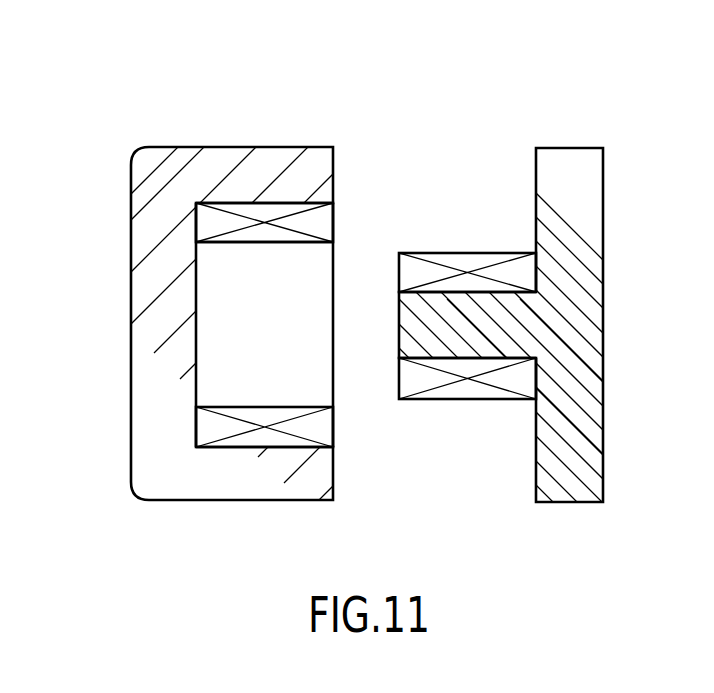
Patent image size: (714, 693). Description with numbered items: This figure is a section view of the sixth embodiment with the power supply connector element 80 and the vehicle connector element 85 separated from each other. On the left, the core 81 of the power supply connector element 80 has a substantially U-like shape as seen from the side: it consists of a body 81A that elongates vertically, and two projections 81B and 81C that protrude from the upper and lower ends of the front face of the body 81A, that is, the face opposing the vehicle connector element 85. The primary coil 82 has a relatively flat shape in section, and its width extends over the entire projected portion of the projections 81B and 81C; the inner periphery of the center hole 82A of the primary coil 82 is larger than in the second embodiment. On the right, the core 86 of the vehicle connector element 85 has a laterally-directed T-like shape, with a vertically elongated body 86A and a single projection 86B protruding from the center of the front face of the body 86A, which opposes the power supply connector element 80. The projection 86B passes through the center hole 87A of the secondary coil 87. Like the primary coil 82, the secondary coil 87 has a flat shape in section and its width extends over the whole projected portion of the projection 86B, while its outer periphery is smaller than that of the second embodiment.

The power supply connector element 80 is at (222, 130).
The core 81 is at (170, 146).
The body 81A is at (138, 365).
The projection 81B is at (278, 148).
The projection 81C is at (224, 501).
The primary coil 82 is at (212, 214).
The center hole 82A is at (240, 246).
The vehicle connector element 85 is at (560, 127).
The core 86 is at (596, 160).
The body 86A is at (597, 307).
The projection 86B is at (455, 343).
The secondary coil 87 is at (440, 256).
The center hole 87A is at (490, 298).